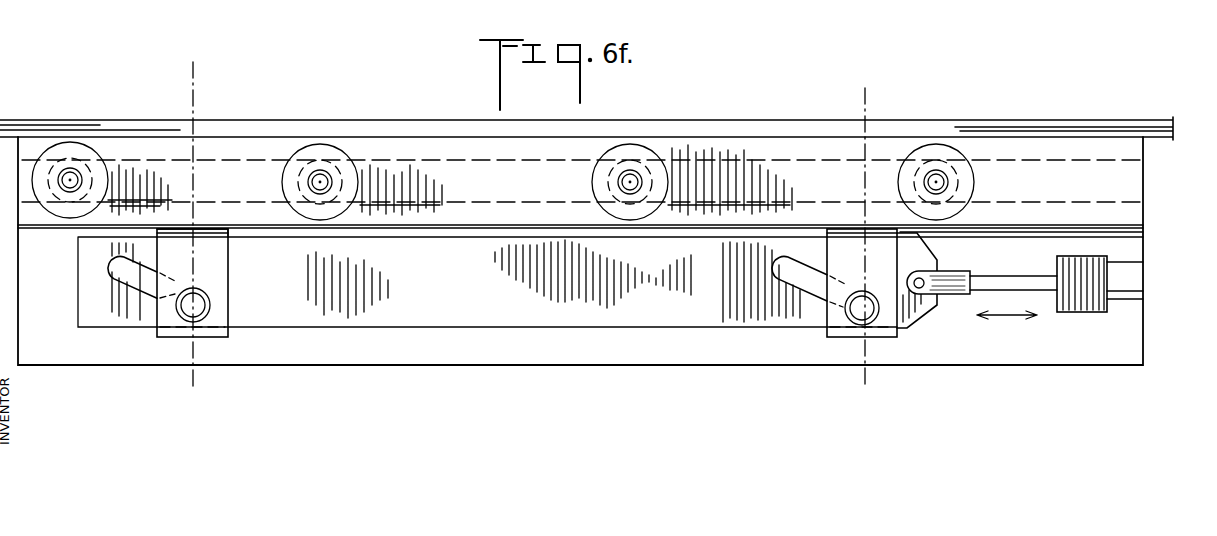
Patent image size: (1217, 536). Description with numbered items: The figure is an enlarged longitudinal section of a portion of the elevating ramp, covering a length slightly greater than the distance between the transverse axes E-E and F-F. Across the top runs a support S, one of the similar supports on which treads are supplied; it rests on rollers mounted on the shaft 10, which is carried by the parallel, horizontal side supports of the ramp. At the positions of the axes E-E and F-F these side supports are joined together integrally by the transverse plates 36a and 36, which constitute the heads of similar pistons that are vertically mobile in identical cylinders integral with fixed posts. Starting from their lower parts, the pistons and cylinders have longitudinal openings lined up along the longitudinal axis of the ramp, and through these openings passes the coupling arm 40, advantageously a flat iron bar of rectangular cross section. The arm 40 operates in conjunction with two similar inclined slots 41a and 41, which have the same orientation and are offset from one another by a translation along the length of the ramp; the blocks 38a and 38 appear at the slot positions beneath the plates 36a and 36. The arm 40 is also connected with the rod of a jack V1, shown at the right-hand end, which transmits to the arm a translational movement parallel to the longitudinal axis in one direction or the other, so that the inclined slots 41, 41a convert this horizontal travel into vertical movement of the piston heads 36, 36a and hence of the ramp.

The shaft 10 is at (634, 178).
The transverse plate 36 is at (903, 232).
The transverse plate 36a is at (222, 231).
The clamp block 38 is at (887, 338).
The clamp block 38a is at (228, 296).
The coupling arm 40 is at (535, 328).
The inclined slot 41 is at (797, 333).
The inclined slot 41a is at (140, 293).
The jack V1 is at (1085, 313).
The support S is at (348, 128).
The axis E- E is at (192, 213).
The axis F- F is at (864, 244).